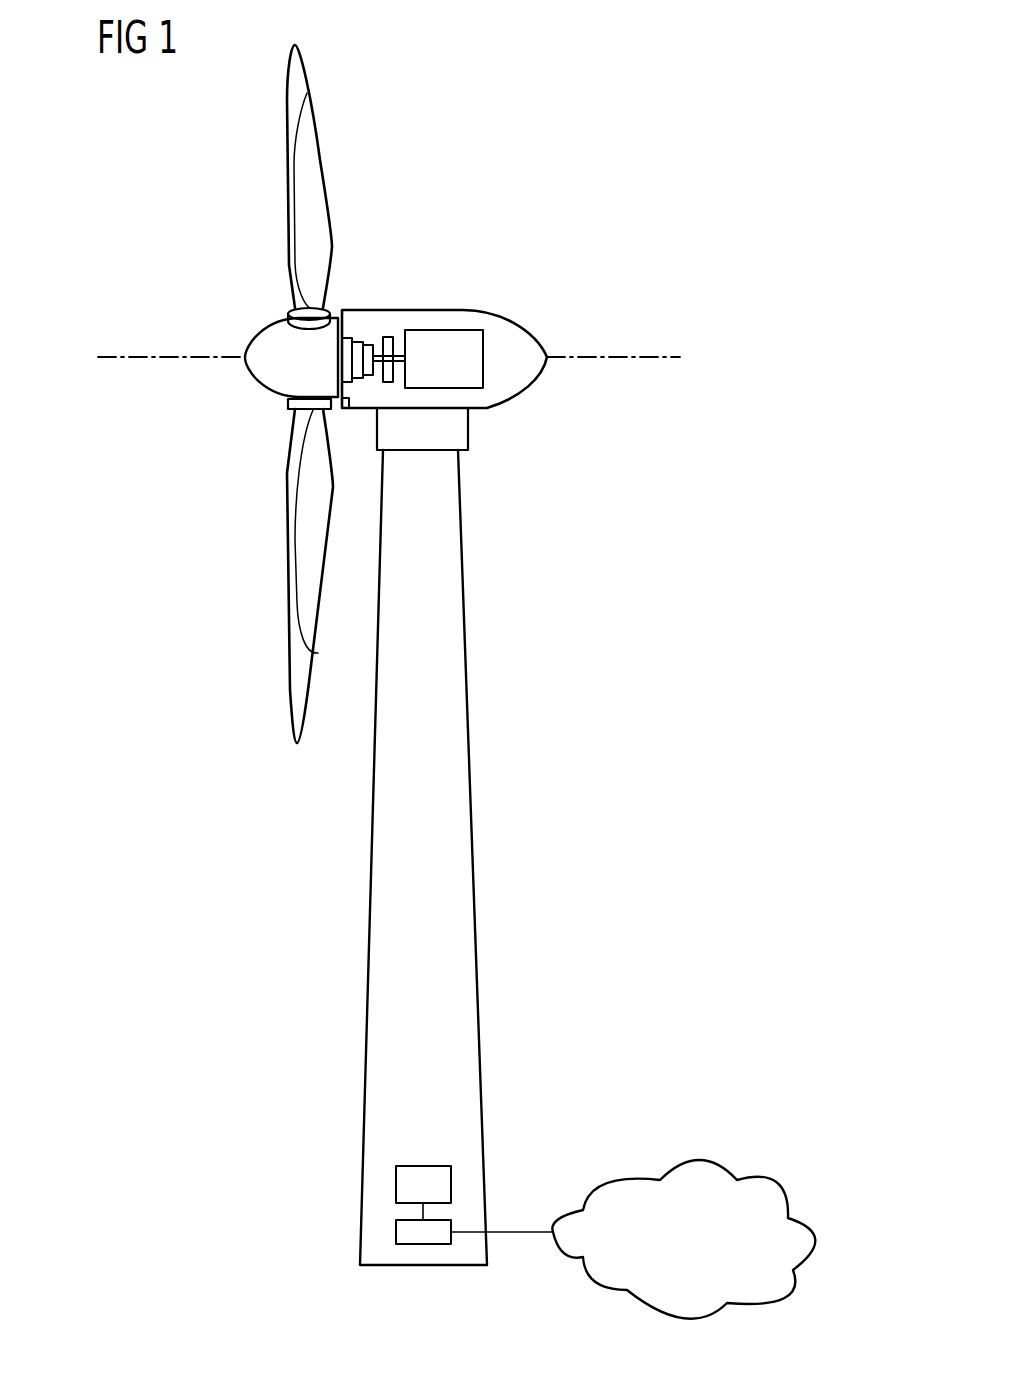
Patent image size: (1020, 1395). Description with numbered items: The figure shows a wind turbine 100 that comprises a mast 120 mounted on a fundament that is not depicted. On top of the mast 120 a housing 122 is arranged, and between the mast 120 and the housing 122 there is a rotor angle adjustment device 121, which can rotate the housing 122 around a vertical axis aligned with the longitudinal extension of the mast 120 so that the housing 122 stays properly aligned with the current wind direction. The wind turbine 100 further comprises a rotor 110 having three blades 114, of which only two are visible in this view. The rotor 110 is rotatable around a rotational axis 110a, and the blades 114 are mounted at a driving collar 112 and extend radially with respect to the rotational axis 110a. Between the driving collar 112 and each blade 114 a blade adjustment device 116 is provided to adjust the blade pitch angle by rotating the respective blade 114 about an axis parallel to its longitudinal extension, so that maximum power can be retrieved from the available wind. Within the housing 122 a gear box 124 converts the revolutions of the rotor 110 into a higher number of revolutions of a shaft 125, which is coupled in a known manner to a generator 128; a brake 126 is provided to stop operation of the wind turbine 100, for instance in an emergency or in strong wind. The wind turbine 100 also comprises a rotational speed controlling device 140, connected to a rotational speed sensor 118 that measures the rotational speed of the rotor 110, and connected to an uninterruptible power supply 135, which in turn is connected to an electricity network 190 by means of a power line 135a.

The wind turbine 100 is at (610, 110).
The rotor 110 is at (214, 265).
The rotational axis 110a is at (138, 357).
The driving collar 112 is at (247, 377).
The blade 114 is at (287, 101).
The blade adjustment device 116 is at (290, 314).
The rotational speed sensor 118 is at (344, 409).
The mast 120 is at (470, 745).
The rotor angle adjustment device 121 is at (468, 425).
The housing 122 is at (517, 327).
The gear box 124 is at (352, 338).
The shaft 125 is at (380, 378).
The brake 126 is at (390, 337).
The generator 128 is at (455, 330).
The uninterruptible power supply 135 is at (423, 1244).
The power line 135a is at (518, 1232).
The rotational speed controlling device 140 is at (425, 1166).
The electricity network 190 is at (697, 1163).